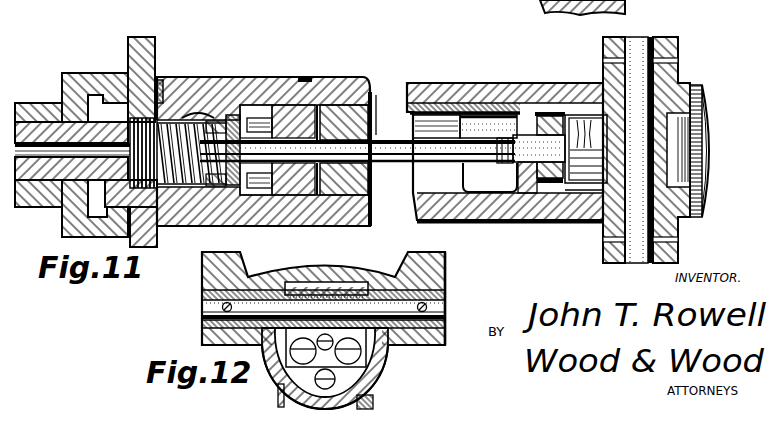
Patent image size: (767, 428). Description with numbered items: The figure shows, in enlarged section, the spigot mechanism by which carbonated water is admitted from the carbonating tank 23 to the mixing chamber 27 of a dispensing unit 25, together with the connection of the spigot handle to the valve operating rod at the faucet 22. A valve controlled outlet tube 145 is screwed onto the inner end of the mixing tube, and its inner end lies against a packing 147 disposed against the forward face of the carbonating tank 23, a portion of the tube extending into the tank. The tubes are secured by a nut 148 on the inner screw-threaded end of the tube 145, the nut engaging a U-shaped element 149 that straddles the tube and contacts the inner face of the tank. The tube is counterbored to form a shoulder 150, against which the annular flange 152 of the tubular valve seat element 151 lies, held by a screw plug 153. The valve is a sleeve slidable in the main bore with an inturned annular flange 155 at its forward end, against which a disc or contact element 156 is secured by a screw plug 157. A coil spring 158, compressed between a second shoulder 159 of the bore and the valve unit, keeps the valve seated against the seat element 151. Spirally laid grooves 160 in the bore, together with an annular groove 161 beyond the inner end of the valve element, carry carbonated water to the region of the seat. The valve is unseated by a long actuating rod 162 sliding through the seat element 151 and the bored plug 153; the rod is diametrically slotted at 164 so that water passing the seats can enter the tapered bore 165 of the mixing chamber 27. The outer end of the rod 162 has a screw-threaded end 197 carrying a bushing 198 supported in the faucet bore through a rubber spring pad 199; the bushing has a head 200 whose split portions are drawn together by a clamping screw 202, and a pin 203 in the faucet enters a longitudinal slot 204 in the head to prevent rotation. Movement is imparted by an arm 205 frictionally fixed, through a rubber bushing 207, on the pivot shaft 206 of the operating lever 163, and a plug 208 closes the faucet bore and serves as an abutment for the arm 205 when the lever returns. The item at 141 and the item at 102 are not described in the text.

In FIG. 11, the faucet 22 is at (686, 64).
In FIG. 12, the faucet 22 is at (449, 332).
In FIG. 11, the carbonating tank 23 is at (160, 56).
In FIG. 11, the dispensing unit 25 is at (445, 83).
In FIG. 11, the mixing chamber 27 is at (425, 183).
In FIG. 11, the coupling 102 is at (382, 107).
In FIG. 11, the body end 141 is at (366, 77).
In FIG. 11, the valve controlled outlet tube 145 is at (170, 77).
In FIG. 11, the packing 147 is at (148, 250).
In FIG. 11, the nut 148 is at (32, 103).
In FIG. 11, the U-shaped element 149 is at (88, 73).
In FIG. 11, the shoulder 150 is at (268, 228).
In FIG. 11, the valve seat element 151 is at (261, 104).
In FIG. 11, the annular flange 152 is at (291, 104).
In FIG. 11, the screw plug 153 is at (318, 82).
In FIG. 11, the inturned annular flange 155 is at (246, 228).
In FIG. 11, the contact element 156 is at (245, 78).
In FIG. 11, the screw plug 157 is at (222, 78).
In FIG. 11, the coil spring 158 is at (200, 78).
In FIG. 11, the second shoulder 159 is at (40, 207).
In FIG. 11, the spirally laid grooves 160 is at (192, 228).
In FIG. 11, the annular groove 161 is at (186, 228).
In FIG. 11, the actuating rod 162 is at (404, 140).
In FIG. 11, the lever 163 is at (682, 45).
In FIG. 12, the lever 163 is at (447, 272).
In FIG. 11, the slot 164 is at (334, 98).
In FIG. 11, the bore 165 is at (448, 225).
In FIG. 11, the screw-threaded outer end 197 is at (475, 177).
In FIG. 12, the screw-threaded outer end 197 is at (283, 386).
In FIG. 11, the bushing 198 is at (540, 116).
In FIG. 11, the rubber spring pad 199 is at (543, 112).
In FIG. 11, the head 200 is at (580, 223).
In FIG. 12, the clamping screw 202 is at (378, 388).
In FIG. 11, the pin 203 is at (571, 115).
In FIG. 11, the longitudinal slot 204 is at (592, 115).
In FIG. 11, the arm 205 is at (698, 120).
In FIG. 12, the arm 205 is at (366, 362).
In FIG. 11, the pivot shaft 206 is at (640, 40).
In FIG. 12, the pivot shaft 206 is at (447, 304).
In FIG. 11, the rubber bushing 207 is at (672, 154).
In FIG. 12, the rubber bushing 207 is at (329, 282).
In FIG. 11, the plug 208 is at (706, 148).